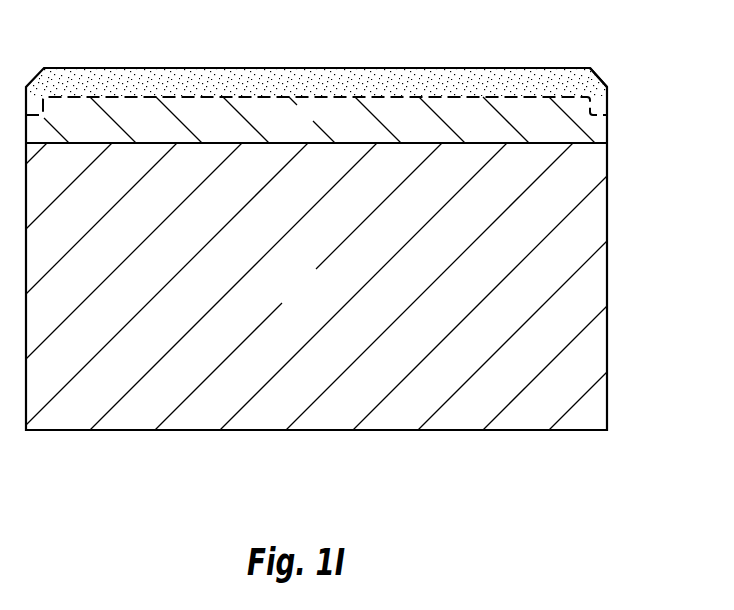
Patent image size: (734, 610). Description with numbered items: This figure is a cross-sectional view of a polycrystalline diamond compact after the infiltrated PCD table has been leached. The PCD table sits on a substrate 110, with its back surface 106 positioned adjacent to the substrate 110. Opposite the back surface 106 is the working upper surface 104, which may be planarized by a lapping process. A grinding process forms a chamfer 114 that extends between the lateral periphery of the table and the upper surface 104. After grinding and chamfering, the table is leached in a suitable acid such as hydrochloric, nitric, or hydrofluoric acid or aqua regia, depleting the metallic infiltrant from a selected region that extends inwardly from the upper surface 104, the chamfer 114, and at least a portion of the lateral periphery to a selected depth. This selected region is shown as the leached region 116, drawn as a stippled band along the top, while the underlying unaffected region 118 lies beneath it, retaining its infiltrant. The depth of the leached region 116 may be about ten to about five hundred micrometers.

The upper surface 104 is at (462, 70).
The back surface 106 is at (582, 143).
The substrate 110 is at (312, 296).
The chamfer 114 is at (598, 77).
The leached region 116 is at (137, 80).
The region 118 is at (312, 131).